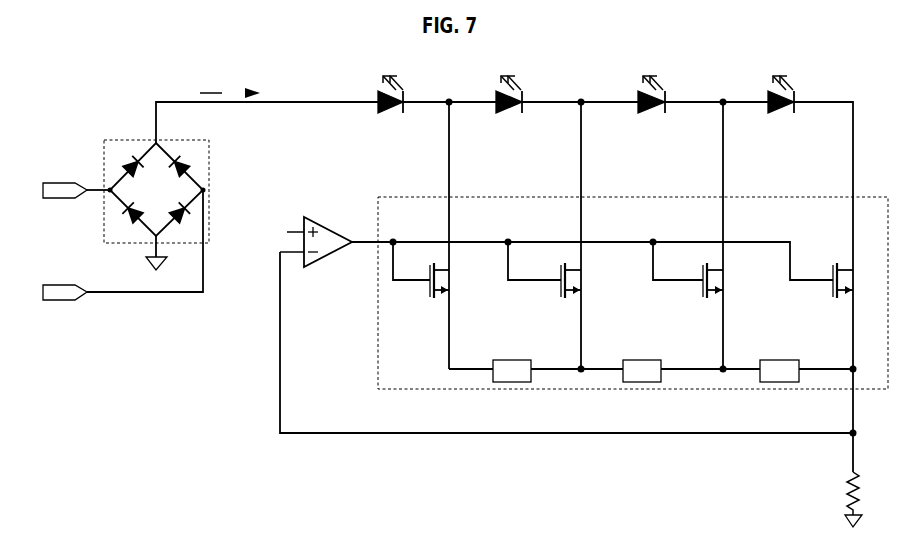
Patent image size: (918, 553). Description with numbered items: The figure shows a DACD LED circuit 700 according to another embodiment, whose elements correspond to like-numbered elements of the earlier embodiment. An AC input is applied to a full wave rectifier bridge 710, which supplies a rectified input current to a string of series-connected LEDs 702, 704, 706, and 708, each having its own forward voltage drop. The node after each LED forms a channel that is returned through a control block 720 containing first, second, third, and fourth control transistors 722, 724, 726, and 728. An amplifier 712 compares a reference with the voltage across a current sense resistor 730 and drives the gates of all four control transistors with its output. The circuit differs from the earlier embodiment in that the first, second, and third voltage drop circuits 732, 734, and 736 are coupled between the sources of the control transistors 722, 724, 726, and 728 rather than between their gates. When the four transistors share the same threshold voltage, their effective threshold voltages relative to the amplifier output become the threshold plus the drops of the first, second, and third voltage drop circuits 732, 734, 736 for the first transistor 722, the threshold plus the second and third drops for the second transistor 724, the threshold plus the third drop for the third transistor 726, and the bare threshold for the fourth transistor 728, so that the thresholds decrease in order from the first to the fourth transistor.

The DACD LED circuit 700 is at (182, 60).
The LED 702 is at (378, 97).
The LED 704 is at (496, 97).
The LED 706 is at (638, 97).
The LED 708 is at (768, 97).
The full wave rectifier bridge 710 is at (135, 140).
The amplifier 712 is at (304, 217).
The control circuit 720 is at (378, 197).
The first control transistor 722 is at (428, 291).
The second control transistor 724 is at (560, 291).
The third control transistor 726 is at (702, 291).
The fourth control transistor 728 is at (832, 291).
The current sense resistor 730 is at (848, 479).
The first voltage drop circuit 732 is at (495, 383).
The second voltage drop circuit 734 is at (630, 383).
The third voltage drop circuit 736 is at (768, 383).